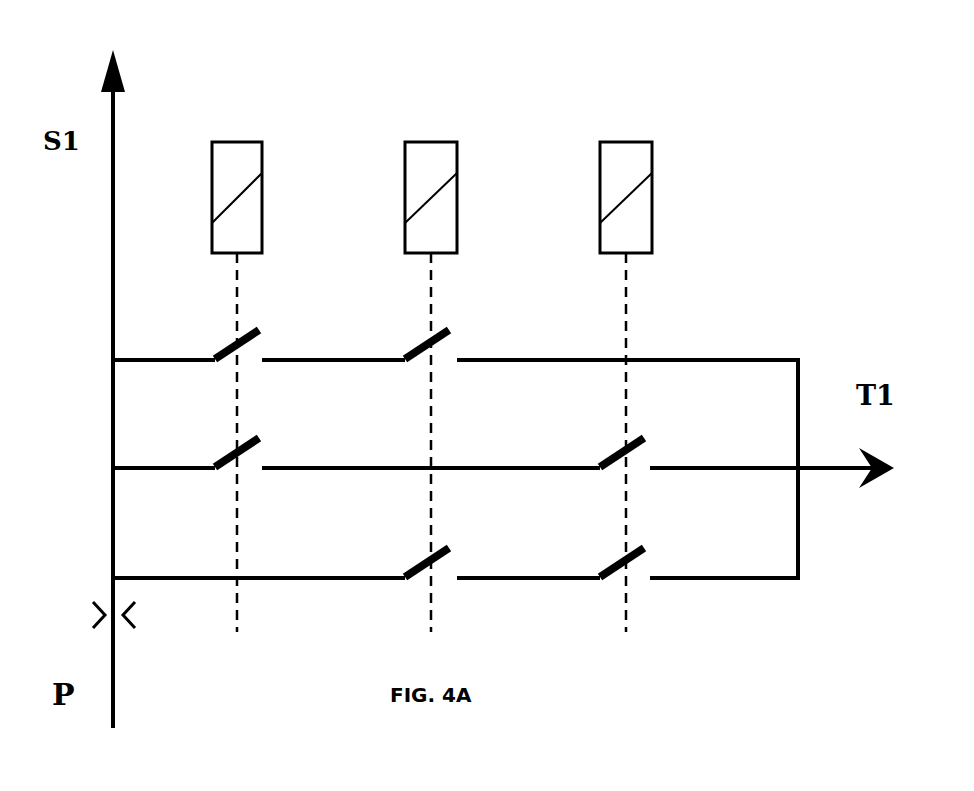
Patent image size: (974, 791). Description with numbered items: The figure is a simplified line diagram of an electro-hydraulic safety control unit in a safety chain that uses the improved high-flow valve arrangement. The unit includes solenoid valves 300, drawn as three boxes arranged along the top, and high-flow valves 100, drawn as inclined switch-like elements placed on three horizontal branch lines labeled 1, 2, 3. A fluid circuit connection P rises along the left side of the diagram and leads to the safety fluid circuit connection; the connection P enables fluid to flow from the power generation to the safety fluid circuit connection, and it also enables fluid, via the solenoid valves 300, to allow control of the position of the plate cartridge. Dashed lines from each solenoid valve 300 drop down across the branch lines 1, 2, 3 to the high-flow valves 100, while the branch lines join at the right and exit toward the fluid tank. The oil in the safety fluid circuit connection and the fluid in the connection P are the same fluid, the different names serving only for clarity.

The high-flow valve 100 is at (262, 330).
The solenoid valve 300 is at (262, 150).
The first output waveguide 1 is at (456, 338).
The second output waveguide 2 is at (503, 456).
The third output waveguide 3 is at (456, 556).